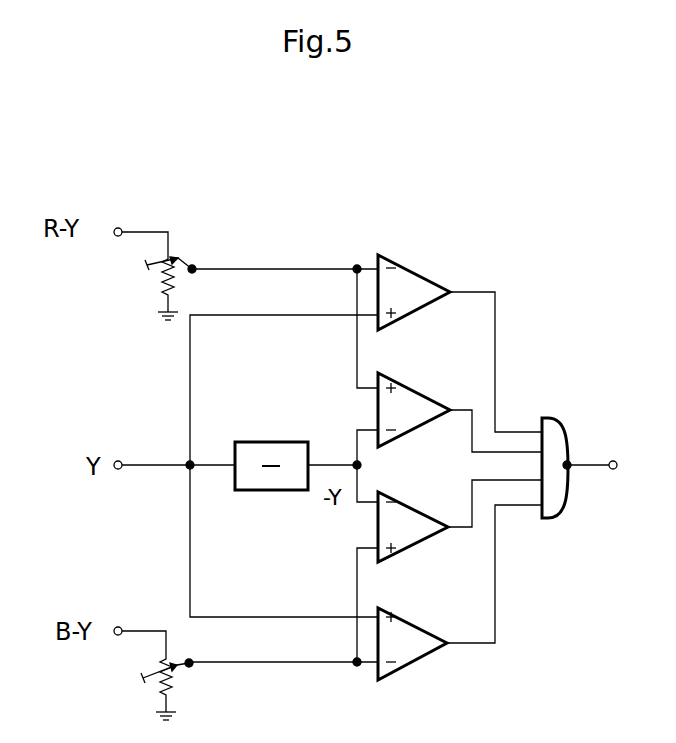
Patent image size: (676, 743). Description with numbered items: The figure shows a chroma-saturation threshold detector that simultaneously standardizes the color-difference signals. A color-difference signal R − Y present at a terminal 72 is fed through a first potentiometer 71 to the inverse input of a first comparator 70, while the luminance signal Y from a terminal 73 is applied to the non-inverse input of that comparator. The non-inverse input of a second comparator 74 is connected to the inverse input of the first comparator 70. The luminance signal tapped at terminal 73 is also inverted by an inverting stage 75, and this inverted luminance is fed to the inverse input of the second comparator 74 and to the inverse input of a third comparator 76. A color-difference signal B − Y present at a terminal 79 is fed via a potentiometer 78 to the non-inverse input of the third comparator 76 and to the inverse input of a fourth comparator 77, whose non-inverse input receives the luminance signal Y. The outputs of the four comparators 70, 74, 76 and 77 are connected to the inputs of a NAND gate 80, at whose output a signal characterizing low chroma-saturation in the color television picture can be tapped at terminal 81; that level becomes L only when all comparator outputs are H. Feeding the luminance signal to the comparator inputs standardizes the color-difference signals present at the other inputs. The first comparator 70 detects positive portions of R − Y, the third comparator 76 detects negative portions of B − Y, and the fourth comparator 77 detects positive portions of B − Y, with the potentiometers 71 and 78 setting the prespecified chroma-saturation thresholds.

The first comparator 70 is at (420, 287).
The first potentiometer 71 is at (177, 276).
The terminal 72 is at (126, 216).
The terminal 73 is at (124, 451).
The second comparator 74 is at (418, 408).
The inverting stage 75 is at (270, 448).
The third comparator 76 is at (415, 525).
The fourth comparator 77 is at (420, 638).
The potentiometer 78 is at (173, 676).
The terminal 79 is at (128, 614).
The NAND gate 80 is at (553, 452).
The terminal 81 is at (630, 467).